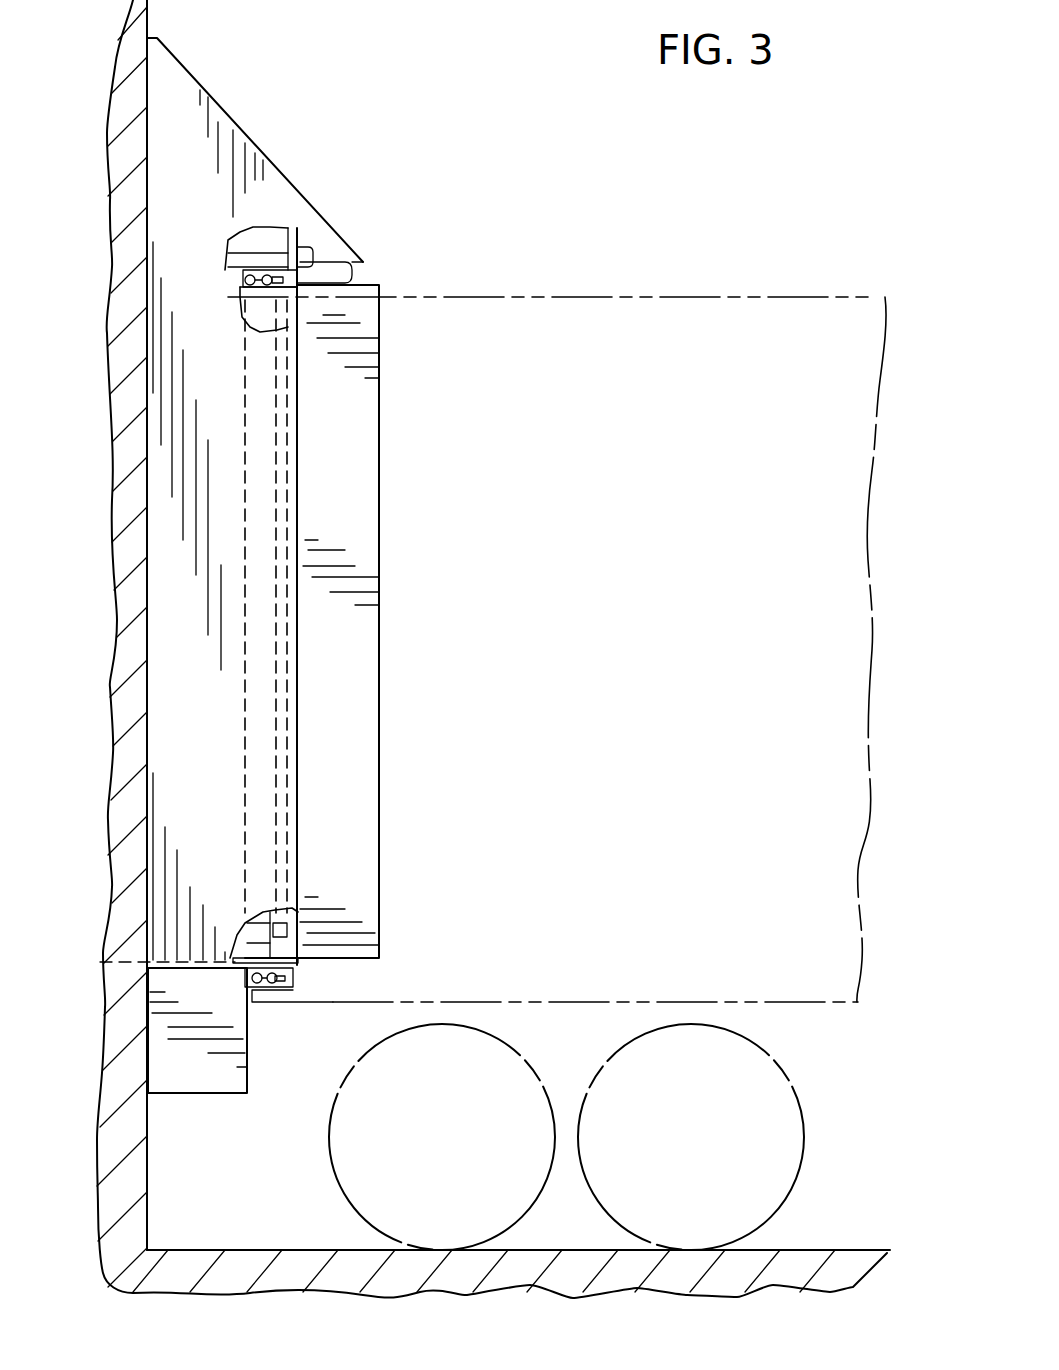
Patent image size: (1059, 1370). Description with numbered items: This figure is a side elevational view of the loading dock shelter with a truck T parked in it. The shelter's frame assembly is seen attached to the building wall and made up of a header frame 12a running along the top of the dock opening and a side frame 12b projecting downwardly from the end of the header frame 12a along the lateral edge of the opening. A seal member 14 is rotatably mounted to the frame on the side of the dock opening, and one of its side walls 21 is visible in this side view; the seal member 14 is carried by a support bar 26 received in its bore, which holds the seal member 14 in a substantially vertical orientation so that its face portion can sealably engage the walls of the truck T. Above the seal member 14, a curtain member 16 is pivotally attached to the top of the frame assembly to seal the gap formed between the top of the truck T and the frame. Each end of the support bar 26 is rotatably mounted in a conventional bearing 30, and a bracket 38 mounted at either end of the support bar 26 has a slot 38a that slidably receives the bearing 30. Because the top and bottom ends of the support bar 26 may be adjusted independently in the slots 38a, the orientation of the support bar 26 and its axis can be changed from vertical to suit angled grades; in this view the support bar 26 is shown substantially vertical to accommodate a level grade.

The header frame 12a is at (163, 218).
The side frame 12b is at (165, 550).
The seal member 14 is at (378, 407).
The curtain member 16 is at (362, 266).
The side wall 21 is at (363, 490).
The support bar 26 is at (288, 633).
The bearing 30 is at (300, 975).
The bracket 38 is at (238, 277).
The slot 38a is at (243, 297).
The truck T is at (690, 654).